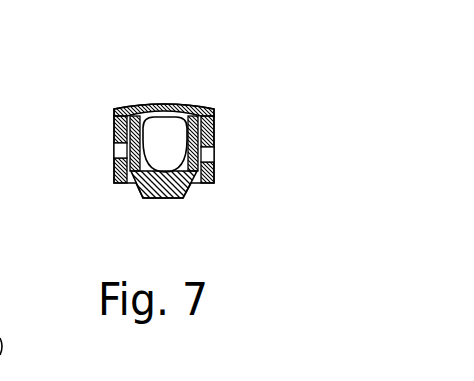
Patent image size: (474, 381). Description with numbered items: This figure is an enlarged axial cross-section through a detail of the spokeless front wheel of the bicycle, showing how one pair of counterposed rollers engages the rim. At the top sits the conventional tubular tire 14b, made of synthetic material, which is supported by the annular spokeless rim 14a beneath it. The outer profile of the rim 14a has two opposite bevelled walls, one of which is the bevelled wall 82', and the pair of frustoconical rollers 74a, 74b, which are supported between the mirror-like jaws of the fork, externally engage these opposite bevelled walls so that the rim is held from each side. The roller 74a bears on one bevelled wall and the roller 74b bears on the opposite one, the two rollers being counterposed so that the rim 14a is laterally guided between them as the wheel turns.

The spokeless rim 14a is at (167, 199).
The tubular tire 14b is at (177, 108).
The frustoconical roller 74a is at (113, 131).
The frustoconical roller 74b is at (215, 127).
The bevelled wall 82' is at (83, 166).